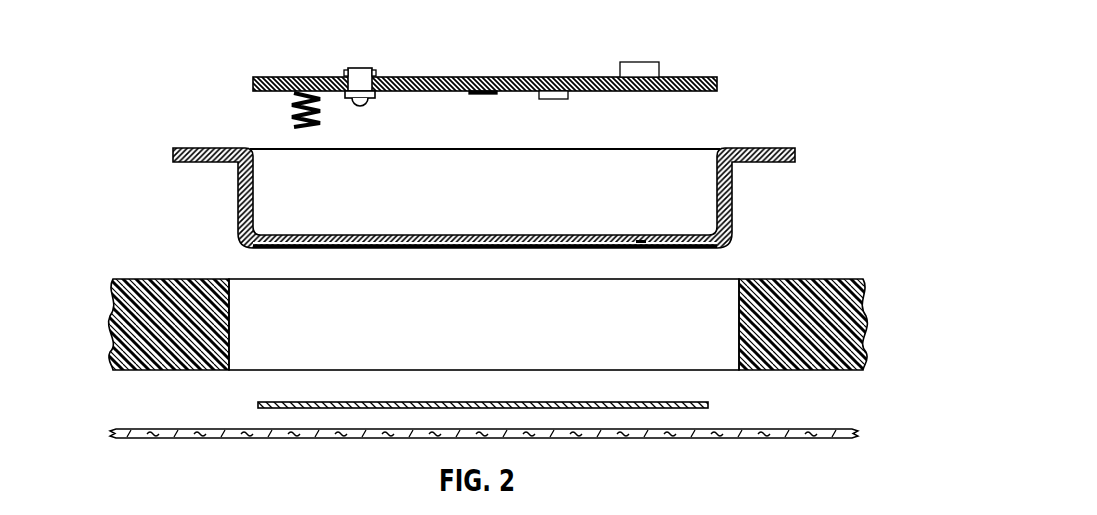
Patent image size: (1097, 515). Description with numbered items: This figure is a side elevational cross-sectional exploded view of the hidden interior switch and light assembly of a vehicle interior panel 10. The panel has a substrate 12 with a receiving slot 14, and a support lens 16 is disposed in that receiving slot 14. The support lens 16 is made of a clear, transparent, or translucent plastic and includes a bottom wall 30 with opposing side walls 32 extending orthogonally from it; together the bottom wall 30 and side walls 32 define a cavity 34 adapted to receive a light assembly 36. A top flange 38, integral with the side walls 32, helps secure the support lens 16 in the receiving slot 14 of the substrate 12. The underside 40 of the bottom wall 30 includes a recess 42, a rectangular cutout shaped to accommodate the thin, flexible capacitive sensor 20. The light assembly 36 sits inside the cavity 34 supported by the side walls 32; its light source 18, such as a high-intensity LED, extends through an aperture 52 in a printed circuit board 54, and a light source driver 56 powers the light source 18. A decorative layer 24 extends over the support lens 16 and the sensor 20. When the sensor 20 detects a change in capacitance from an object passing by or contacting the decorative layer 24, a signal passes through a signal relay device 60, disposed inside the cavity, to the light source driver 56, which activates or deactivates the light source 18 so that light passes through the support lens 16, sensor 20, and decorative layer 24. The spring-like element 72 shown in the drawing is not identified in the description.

The vehicle interior panel 10 is at (92, 70).
The substrate 12 is at (835, 278).
The receiving slot 14 is at (473, 331).
The support lens 16 is at (479, 191).
The light source 18 is at (368, 103).
The sensor 20 is at (693, 401).
The decorative layer 24 is at (835, 428).
The bottom wall 30 is at (338, 234).
The side walls 32 is at (237, 188).
The cavity 34 is at (475, 206).
The light assembly 36 is at (584, 66).
The top flange 38 is at (196, 146).
The underside 40 is at (555, 246).
The recess 42 is at (641, 240).
The aperture 52 is at (355, 77).
The printed circuit board 54 is at (522, 77).
The light source driver 56 is at (643, 62).
The signal relay device 60 is at (272, 110).
The spring 72 is at (320, 97).